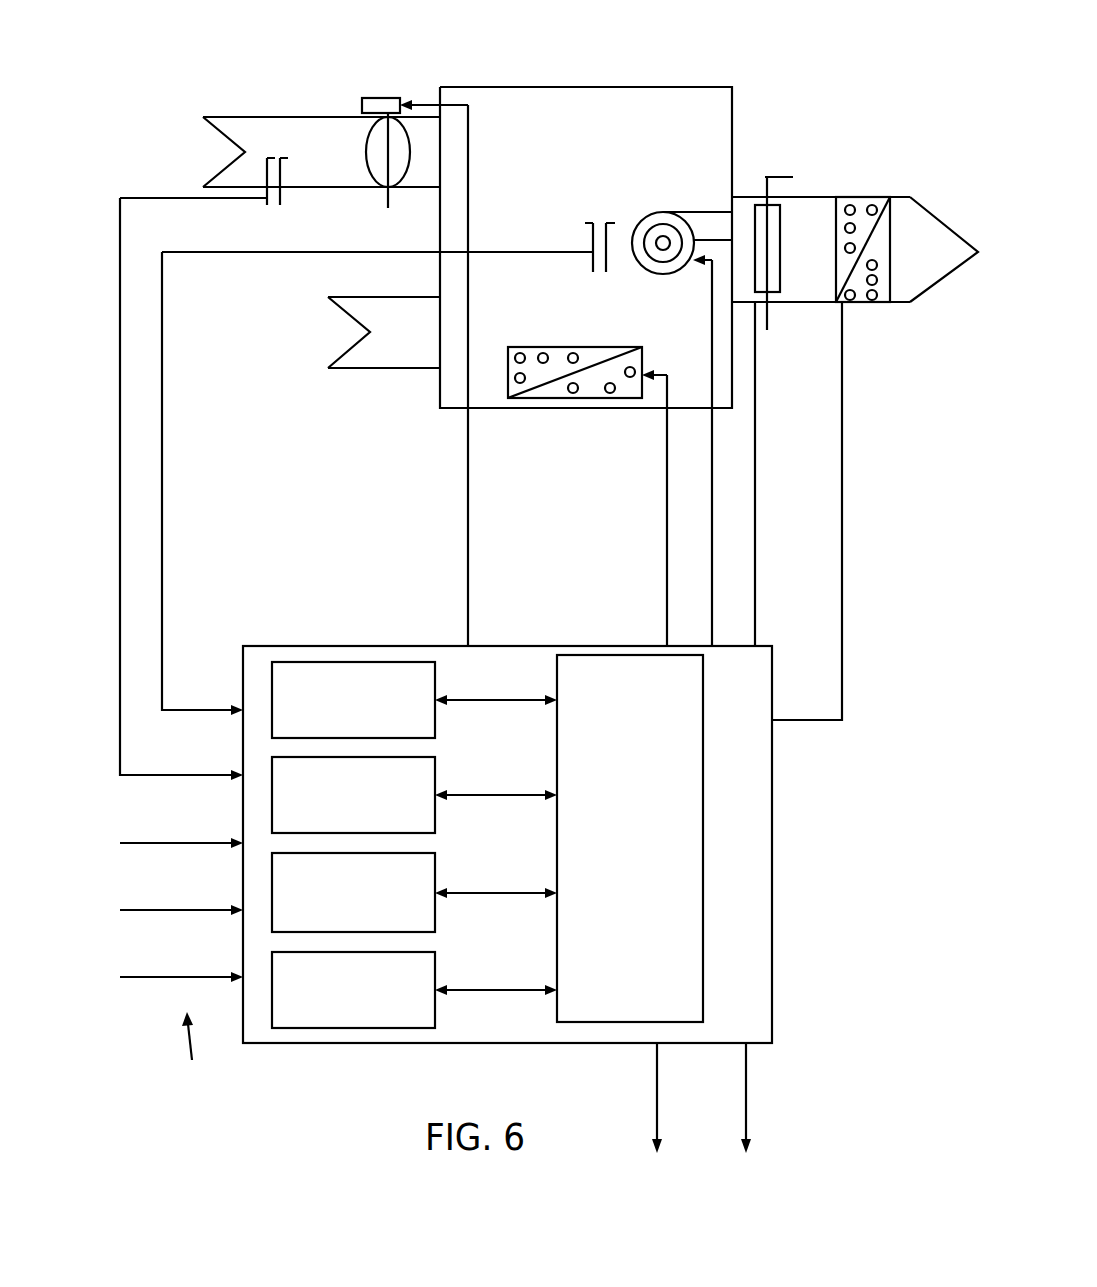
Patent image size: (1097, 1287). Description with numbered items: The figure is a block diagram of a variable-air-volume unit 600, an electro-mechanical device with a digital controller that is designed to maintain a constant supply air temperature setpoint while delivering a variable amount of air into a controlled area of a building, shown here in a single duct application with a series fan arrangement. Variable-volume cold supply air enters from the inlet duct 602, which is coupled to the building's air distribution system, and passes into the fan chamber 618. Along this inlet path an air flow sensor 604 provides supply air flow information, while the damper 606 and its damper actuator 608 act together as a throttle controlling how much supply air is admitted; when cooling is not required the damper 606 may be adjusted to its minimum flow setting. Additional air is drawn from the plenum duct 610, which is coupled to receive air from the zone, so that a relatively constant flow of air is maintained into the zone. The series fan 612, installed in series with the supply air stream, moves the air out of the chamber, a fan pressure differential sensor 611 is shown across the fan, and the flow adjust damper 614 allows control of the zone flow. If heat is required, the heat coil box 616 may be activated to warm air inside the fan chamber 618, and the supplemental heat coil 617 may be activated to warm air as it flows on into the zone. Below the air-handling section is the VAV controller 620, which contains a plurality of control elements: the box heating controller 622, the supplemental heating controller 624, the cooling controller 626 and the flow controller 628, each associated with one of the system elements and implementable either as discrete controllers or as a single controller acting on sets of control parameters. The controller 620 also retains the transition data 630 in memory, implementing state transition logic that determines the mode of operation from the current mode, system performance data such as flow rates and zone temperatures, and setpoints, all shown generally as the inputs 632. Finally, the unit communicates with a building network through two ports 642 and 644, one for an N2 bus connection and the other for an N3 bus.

The variable-air-volume unit 600 is at (758, 58).
The inlet duct 602 is at (243, 128).
The air flow sensor 604 is at (280, 167).
The damper 606 is at (410, 152).
The damper actuator 608 is at (392, 98).
The plenum duct 610 is at (395, 352).
The fan differential pressure sensor 611 is at (592, 237).
The series fan 612 is at (663, 213).
The flow adjust damper 614 is at (772, 177).
The heat coil box 616 is at (597, 378).
The supplemental heat coil 617 is at (877, 281).
The fan chamber 618 is at (615, 127).
The VAV controller 620 is at (772, 975).
The box heating controller 622 is at (435, 720).
The supplemental heating controller 624 is at (435, 816).
The cooling controller 626 is at (435, 907).
The flow controller 628 is at (435, 1022).
The transition data 630 is at (703, 960).
The inputs 632 is at (200, 1070).
The port 642 is at (655, 1077).
The port 644 is at (746, 1077).